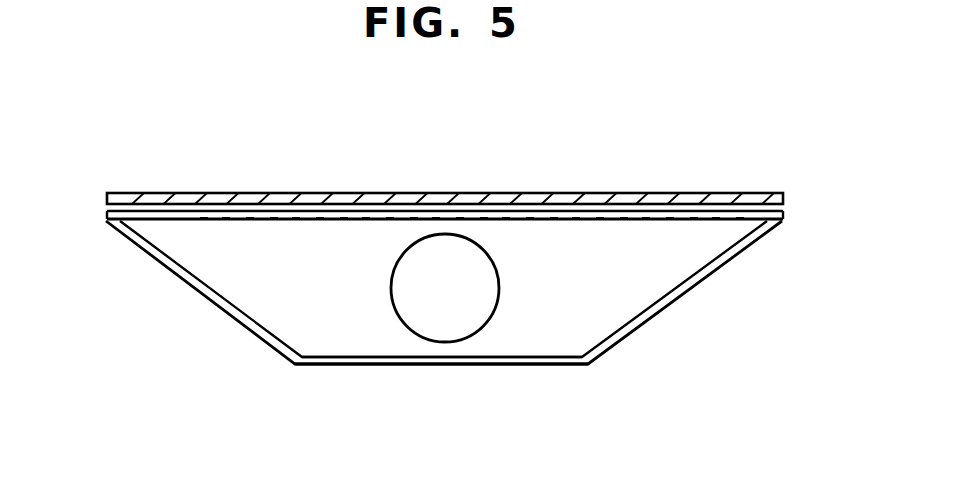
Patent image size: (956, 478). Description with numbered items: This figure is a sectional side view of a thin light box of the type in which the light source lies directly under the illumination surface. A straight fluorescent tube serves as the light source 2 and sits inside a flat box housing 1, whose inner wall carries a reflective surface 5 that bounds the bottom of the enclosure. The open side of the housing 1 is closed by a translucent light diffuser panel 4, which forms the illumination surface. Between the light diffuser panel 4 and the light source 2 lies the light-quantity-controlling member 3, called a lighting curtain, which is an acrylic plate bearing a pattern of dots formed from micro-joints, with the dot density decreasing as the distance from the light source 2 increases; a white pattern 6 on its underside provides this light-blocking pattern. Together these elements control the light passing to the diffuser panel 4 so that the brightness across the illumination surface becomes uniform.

The housing 1 is at (444, 319).
The light source 2 is at (498, 305).
The light-quantity-controlling member 3 is at (533, 224).
The light diffuser panel 4 is at (708, 193).
The reflective surface 5 is at (350, 357).
The white pattern 6 is at (418, 229).